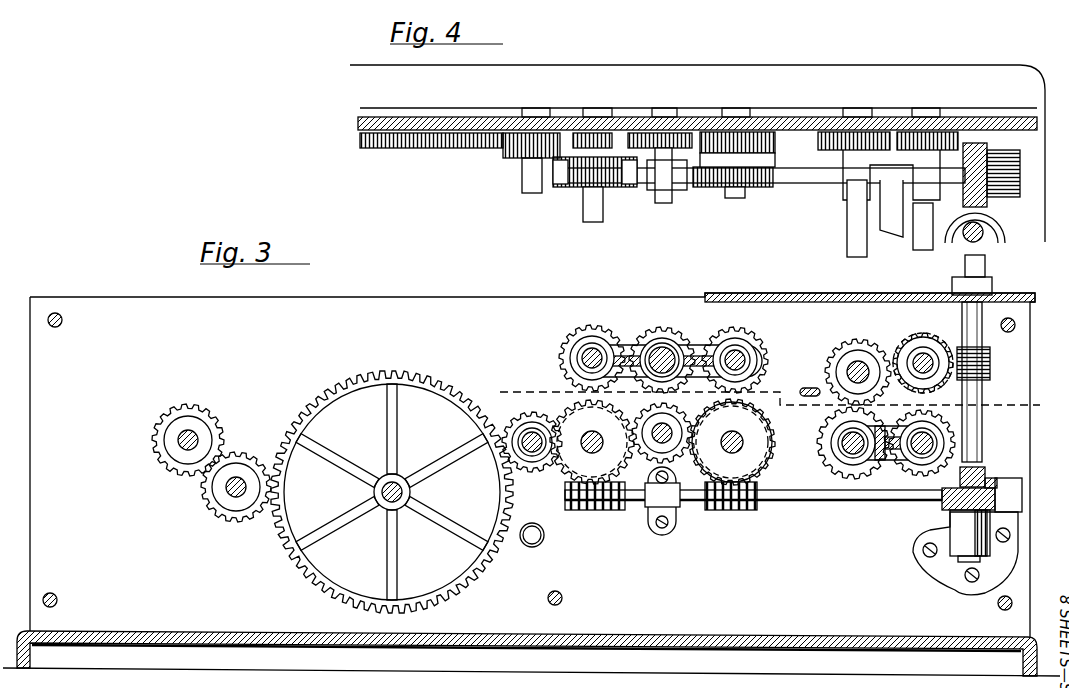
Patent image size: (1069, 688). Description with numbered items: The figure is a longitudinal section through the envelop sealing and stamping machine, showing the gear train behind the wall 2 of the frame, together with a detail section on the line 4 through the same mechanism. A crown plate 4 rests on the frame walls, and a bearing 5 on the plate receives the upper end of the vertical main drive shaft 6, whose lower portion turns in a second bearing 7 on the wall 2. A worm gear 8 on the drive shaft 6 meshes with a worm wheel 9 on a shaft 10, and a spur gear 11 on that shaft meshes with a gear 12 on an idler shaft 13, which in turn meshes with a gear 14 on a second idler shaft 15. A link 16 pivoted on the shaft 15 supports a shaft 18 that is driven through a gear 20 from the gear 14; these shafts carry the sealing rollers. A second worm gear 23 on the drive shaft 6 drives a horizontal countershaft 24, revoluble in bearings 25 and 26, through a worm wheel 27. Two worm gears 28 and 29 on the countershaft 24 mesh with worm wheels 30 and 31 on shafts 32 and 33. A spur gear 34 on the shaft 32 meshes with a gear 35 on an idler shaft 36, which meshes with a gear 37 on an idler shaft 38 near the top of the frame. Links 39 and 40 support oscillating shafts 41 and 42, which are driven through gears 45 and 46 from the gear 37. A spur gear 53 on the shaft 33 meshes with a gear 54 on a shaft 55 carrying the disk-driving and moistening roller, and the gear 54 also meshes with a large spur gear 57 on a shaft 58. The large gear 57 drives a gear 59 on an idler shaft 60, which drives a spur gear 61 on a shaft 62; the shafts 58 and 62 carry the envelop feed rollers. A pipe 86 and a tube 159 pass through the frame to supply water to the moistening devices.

In FIG. 3, the wall 2 is at (388, 310).
In FIG. 4, the wall 2 is at (470, 130).
In FIG. 3, the crown plate 4 is at (497, 397).
In FIG. 4, the bearing 5 is at (990, 282).
In FIG. 3, the main drive shaft 6 is at (982, 428).
In FIG. 4, the main drive shaft 6 is at (1005, 235).
In FIG. 3, the second bearing 7 is at (950, 532).
In FIG. 3, the worm gear 8 is at (990, 363).
In FIG. 3, the worm wheel 9 is at (915, 340).
In FIG. 3, the shaft 10 is at (930, 352).
In FIG. 3, the spur gear 11 is at (895, 355).
In FIG. 4, the spur gear 11 is at (950, 132).
In FIG. 3, the gear 12 is at (845, 345).
In FIG. 4, the gear 12 is at (822, 166).
In FIG. 3, the idler shaft 13 is at (860, 369).
In FIG. 3, the gear 14 is at (830, 445).
In FIG. 3, the second idler shaft 15 is at (848, 455).
In FIG. 4, the second idler shaft 15 is at (847, 245).
In FIG. 3, the link 16 is at (888, 426).
In FIG. 4, the link 16 is at (895, 237).
In FIG. 3, the shaft 18 is at (915, 455).
In FIG. 4, the shaft 18 is at (930, 250).
In FIG. 3, the gear 20 is at (935, 420).
In FIG. 3, the second worm gear 23 is at (990, 490).
In FIG. 4, the second worm gear 23 is at (985, 225).
In FIG. 3, the countershaft 24 is at (820, 500).
In FIG. 4, the countershaft 24 is at (822, 183).
In FIG. 3, the bearing 25 is at (1018, 490).
In FIG. 3, the bearing 26 is at (676, 515).
In FIG. 4, the bearing 26 is at (684, 188).
In FIG. 3, the worm wheel 27 is at (960, 480).
In FIG. 4, the worm wheel 27 is at (987, 160).
In FIG. 3, the worm gear 28 is at (745, 510).
In FIG. 3, the worm gear 29 is at (600, 510).
In FIG. 4, the worm gear 29 is at (570, 185).
In FIG. 3, the worm wheel 30 is at (757, 433).
In FIG. 4, the worm wheel 30 is at (772, 180).
In FIG. 3, the worm wheel 31 is at (545, 455).
In FIG. 4, the worm wheel 31 is at (632, 185).
In FIG. 3, the shaft 32 is at (738, 450).
In FIG. 4, the shaft 32 is at (740, 198).
In FIG. 3, the shaft 33 is at (596, 450).
In FIG. 4, the shaft 33 is at (588, 222).
In FIG. 4, the spur gear 34 is at (830, 132).
In FIG. 3, the gear 35 is at (670, 420).
In FIG. 4, the gear 35 is at (700, 118).
In FIG. 3, the idler shaft 36 is at (662, 443).
In FIG. 4, the idler shaft 36 is at (660, 200).
In FIG. 3, the gear 37 is at (676, 348).
In FIG. 3, the idler shaft 38 is at (655, 347).
In FIG. 3, the link 39 is at (735, 338).
In FIG. 3, the link 40 is at (592, 336).
In FIG. 3, the shaft 41 is at (745, 358).
In FIG. 3, the shaft 42 is at (580, 352).
In FIG. 3, the gear 45 is at (762, 358).
In FIG. 3, the gear 46 is at (570, 370).
In FIG. 4, the spur gear 53 is at (578, 150).
In FIG. 3, the gear 54 is at (525, 412).
In FIG. 4, the gear 54 is at (506, 158).
In FIG. 3, the shaft 55 is at (530, 452).
In FIG. 4, the shaft 55 is at (530, 185).
In FIG. 3, the large spur gear 57 is at (470, 565).
In FIG. 4, the large spur gear 57 is at (440, 148).
In FIG. 3, the shaft 58 is at (388, 498).
In FIG. 3, the gear 59 is at (236, 504).
In FIG. 3, the idler shaft 60 is at (240, 482).
In FIG. 3, the spur gear 61 is at (178, 460).
In FIG. 3, the shaft 62 is at (190, 436).
In FIG. 3, the pipe 86 is at (540, 545).
In FIG. 3, the tube 159 is at (808, 388).